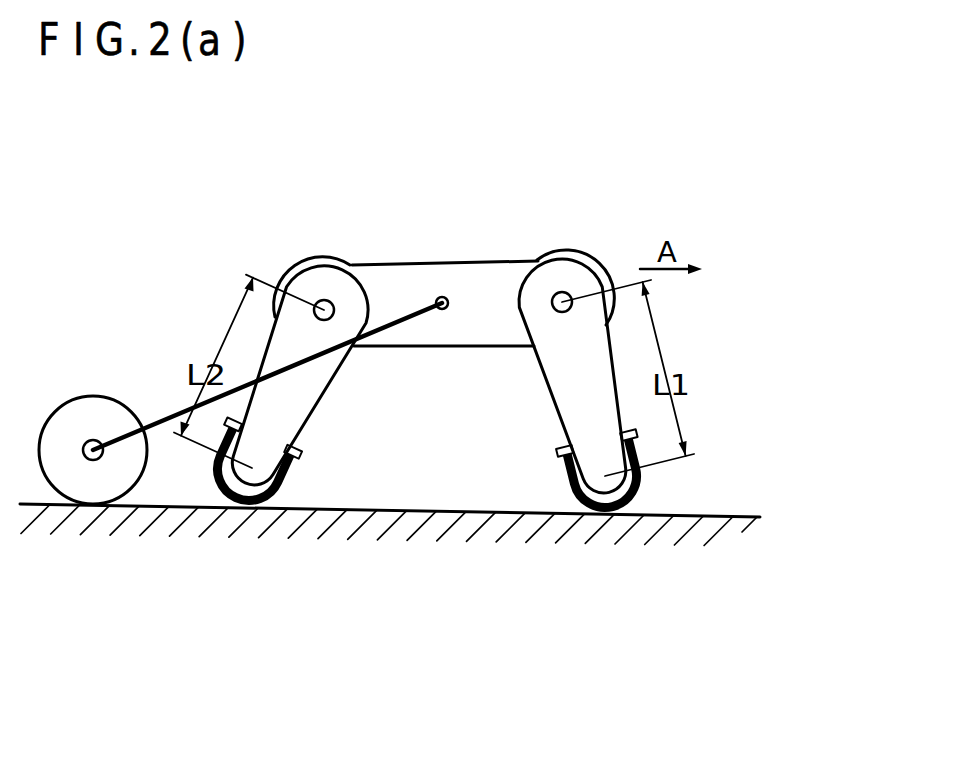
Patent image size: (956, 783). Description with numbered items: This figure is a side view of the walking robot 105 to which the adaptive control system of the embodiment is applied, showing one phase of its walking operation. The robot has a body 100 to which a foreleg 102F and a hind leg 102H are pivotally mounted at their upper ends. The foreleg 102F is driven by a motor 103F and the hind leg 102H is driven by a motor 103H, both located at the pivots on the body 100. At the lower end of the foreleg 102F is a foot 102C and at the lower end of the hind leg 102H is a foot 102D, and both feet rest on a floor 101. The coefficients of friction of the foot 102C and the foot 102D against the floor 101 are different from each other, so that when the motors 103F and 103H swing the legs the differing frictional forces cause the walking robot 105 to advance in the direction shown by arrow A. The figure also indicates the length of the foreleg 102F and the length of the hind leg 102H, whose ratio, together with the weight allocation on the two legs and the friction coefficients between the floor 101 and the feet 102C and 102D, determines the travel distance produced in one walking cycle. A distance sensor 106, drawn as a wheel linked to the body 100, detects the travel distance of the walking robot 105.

The body 100 is at (410, 284).
The floor 101 is at (312, 524).
The foot 102C is at (634, 490).
The foot 102D is at (281, 477).
The foreleg 102F is at (592, 365).
The hind leg 102H is at (282, 343).
The motor 103F is at (569, 251).
The motor 103H is at (300, 258).
The walking robot 105 is at (478, 255).
The distance sensor 106 is at (97, 412).